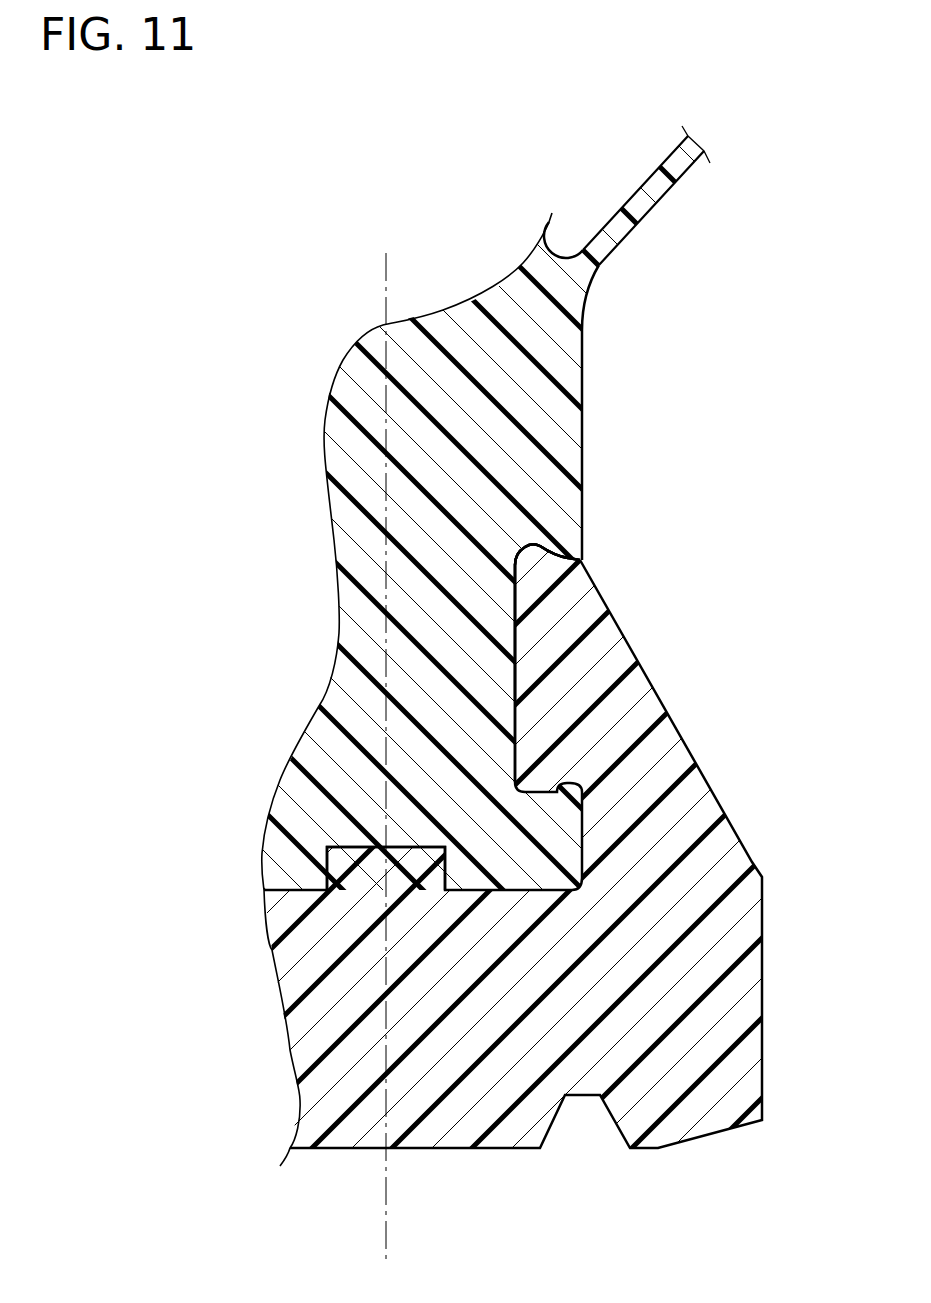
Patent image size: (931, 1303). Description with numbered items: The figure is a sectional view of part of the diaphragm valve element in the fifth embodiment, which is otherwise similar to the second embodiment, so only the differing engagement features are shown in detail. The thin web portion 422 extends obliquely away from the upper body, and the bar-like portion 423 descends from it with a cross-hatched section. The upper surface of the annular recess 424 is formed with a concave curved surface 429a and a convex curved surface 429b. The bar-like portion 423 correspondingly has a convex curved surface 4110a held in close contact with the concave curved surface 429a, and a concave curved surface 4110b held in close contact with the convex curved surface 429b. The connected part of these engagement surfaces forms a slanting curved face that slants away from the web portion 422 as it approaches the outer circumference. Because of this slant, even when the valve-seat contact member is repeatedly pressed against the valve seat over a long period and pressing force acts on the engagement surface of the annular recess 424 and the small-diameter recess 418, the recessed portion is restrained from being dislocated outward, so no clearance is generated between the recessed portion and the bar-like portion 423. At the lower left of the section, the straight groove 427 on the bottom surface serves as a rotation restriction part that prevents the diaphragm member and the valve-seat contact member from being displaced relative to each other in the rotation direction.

The web portion 422 is at (643, 213).
The bar-like portion 423 is at (568, 415).
The convex curved surface 4110a is at (530, 543).
The concave curved surface 4110b is at (555, 553).
The convex curved surface 429b is at (548, 562).
The concave curved surface 429a is at (538, 557).
The annular recess 424 is at (513, 687).
The small-diameter recess 418 is at (518, 727).
The straight groove 427 is at (350, 847).